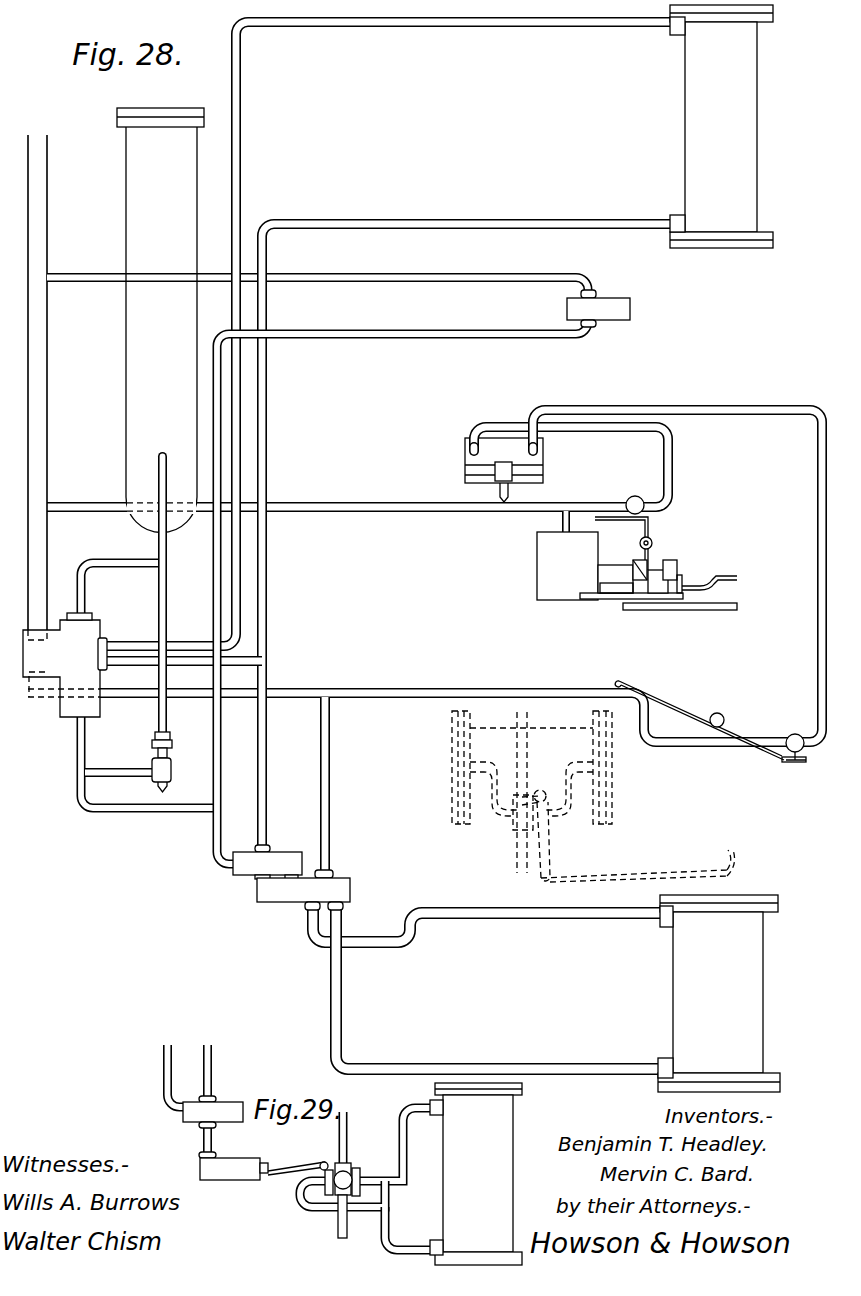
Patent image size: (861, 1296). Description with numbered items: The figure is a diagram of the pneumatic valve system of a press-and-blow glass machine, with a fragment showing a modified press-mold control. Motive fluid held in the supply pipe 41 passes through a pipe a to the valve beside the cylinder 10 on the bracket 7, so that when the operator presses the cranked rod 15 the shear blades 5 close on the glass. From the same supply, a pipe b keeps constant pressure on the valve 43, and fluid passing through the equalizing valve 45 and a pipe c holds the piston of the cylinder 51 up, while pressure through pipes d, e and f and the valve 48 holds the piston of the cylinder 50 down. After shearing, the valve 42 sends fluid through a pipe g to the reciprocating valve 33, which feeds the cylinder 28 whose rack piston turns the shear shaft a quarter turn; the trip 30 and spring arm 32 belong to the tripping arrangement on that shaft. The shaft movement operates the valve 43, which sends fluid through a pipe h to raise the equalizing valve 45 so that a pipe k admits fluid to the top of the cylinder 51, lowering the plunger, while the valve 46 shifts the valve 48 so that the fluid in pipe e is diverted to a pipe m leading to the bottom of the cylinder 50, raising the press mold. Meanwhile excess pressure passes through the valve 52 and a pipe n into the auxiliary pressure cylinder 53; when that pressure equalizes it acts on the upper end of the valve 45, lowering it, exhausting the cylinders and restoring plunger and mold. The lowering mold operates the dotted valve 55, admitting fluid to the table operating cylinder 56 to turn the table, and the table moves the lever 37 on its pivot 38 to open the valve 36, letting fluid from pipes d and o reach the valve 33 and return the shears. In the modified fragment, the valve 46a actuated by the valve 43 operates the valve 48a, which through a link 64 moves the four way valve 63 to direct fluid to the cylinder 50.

In FIG. 28, the shear blades 5 is at (731, 603).
In FIG. 28, the bracket 7 is at (618, 599).
In FIG. 28, the cylinder 10 is at (567, 555).
In FIG. 28, the cranked rod 15 is at (720, 574).
In FIG. 28, the cylinder 28 is at (465, 470).
In FIG. 28, the trip 30 is at (653, 536).
In FIG. 28, the spring arm 32 is at (628, 521).
In FIG. 28, the reciprocating valve 33 is at (505, 471).
In FIG. 28, the valve 36 is at (792, 734).
In FIG. 28, the lever 37 is at (702, 715).
In FIG. 28, the pivot 38 is at (724, 720).
In FIG. 28, the pipe 41 is at (48, 407).
In FIG. 28, the valve 42 is at (631, 494).
In FIG. 28, the valve 43 is at (598, 308).
In FIG. 28, the equalizing valve 45 is at (65, 665).
In FIG. 28, the valve 46 is at (278, 856).
In FIG. 29, the valve 46a is at (194, 1118).
In FIG. 28, the valve 48 is at (280, 900).
In FIG. 29, the valve 48a is at (231, 1179).
In FIG. 28, the cylinder 50 is at (719, 993).
In FIG. 29, the cylinder 50 is at (476, 1174).
In FIG. 28, the cylinder 51 is at (721, 126).
In FIG. 28, the valve 52 is at (172, 768).
In FIG. 28, the auxiliary pressure cylinder 53 is at (160, 320).
In FIG. 28, the valve 55 is at (518, 814).
In FIG. 28, the table operating cylinder 56 is at (593, 796).
In FIG. 29, the four way valve 63 is at (353, 1178).
In FIG. 29, the link 64 is at (290, 1164).
In FIG. 28, the pipe a is at (351, 490).
In FIG. 28, the pipe b is at (417, 278).
In FIG. 28, the pipe c is at (557, 222).
In FIG. 29, the pipe c is at (212, 1065).
In FIG. 28, the pipe d is at (179, 699).
In FIG. 28, the pipe e is at (331, 810).
In FIG. 29, the pipe e is at (348, 1128).
In FIG. 28, the pipe f is at (538, 920).
In FIG. 29, the pipe f is at (408, 1150).
In FIG. 28, the pipe g is at (674, 471).
In FIG. 28, the pipe h is at (383, 339).
In FIG. 29, the pipe h is at (163, 1077).
In FIG. 28, the pipe k is at (545, 28).
In FIG. 28, the pipe m is at (498, 1063).
In FIG. 29, the pipe m is at (390, 1222).
In FIG. 28, the pipe n is at (157, 603).
In FIG. 28, the pipe o is at (817, 556).